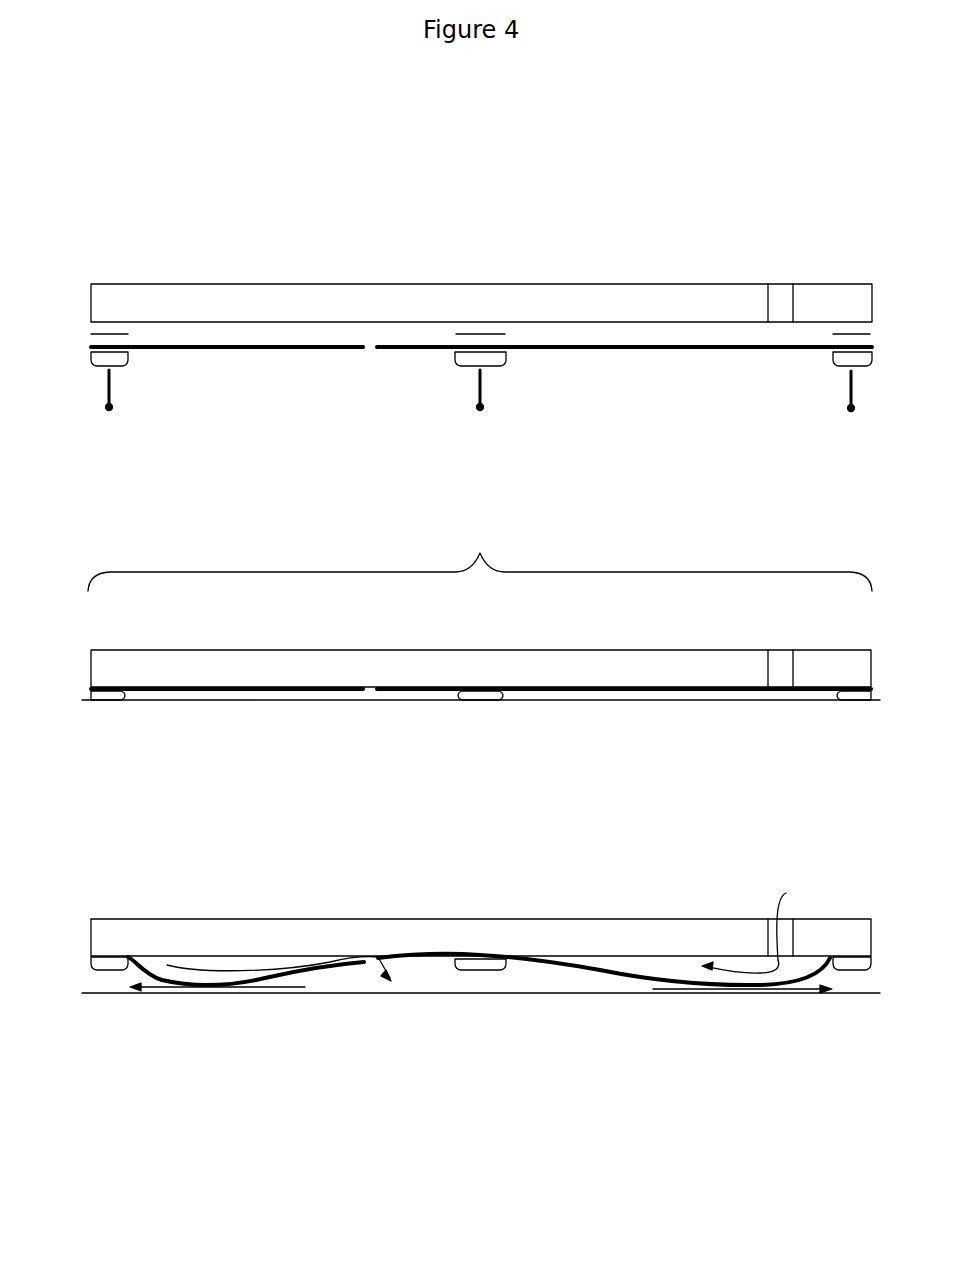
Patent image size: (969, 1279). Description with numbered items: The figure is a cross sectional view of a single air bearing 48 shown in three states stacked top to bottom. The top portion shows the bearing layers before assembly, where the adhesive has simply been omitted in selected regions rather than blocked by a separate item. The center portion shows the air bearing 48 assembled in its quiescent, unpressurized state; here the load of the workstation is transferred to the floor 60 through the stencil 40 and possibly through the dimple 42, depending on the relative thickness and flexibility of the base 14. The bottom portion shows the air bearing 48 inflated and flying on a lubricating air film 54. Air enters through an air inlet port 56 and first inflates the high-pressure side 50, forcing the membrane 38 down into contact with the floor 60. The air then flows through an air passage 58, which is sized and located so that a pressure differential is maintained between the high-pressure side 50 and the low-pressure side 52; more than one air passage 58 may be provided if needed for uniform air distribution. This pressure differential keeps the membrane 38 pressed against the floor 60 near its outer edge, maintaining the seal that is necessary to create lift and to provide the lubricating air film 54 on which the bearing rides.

The base 14 is at (290, 668).
The membrane 38 is at (633, 973).
The stencil 40 is at (115, 693).
The dimple 42 is at (473, 693).
The air bearing 48 is at (480, 559).
The high-pressure side 50 is at (685, 968).
The low-pressure side 52 is at (545, 977).
The lubricating air film 54 is at (185, 988).
The air inlet port 56 is at (775, 929).
The air passage 58 is at (375, 351).
The floor 60 is at (385, 701).